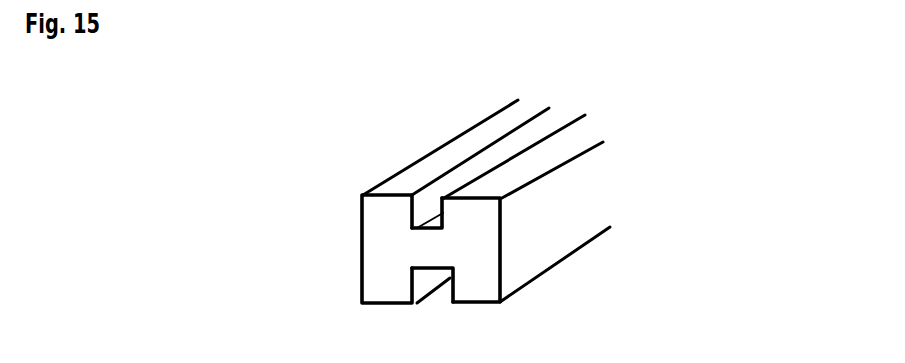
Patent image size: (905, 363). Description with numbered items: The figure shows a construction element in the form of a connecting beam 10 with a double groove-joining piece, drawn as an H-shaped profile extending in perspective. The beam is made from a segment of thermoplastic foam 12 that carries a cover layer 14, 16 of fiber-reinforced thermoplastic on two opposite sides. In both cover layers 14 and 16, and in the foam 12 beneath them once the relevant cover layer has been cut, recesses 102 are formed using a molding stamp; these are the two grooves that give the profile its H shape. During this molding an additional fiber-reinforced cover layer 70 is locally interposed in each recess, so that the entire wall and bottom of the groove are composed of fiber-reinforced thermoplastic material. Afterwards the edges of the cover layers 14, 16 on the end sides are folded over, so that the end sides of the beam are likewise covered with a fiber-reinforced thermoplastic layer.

The connecting beam 10 is at (480, 201).
The thermoplastic foam 12 is at (392, 238).
The cover layer 14 is at (380, 191).
The cover layer 16 is at (500, 293).
The additional fiber-reinforced cover layer 70 is at (412, 270).
The recess 102 is at (427, 197).